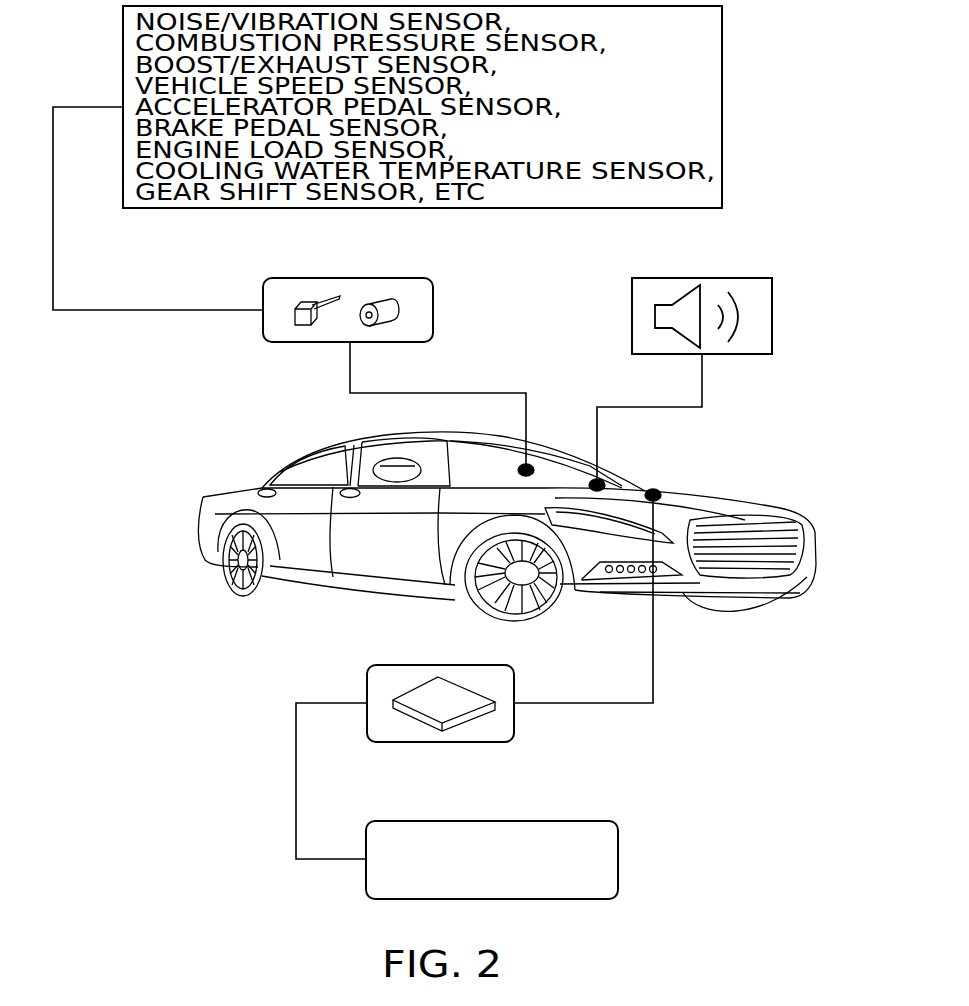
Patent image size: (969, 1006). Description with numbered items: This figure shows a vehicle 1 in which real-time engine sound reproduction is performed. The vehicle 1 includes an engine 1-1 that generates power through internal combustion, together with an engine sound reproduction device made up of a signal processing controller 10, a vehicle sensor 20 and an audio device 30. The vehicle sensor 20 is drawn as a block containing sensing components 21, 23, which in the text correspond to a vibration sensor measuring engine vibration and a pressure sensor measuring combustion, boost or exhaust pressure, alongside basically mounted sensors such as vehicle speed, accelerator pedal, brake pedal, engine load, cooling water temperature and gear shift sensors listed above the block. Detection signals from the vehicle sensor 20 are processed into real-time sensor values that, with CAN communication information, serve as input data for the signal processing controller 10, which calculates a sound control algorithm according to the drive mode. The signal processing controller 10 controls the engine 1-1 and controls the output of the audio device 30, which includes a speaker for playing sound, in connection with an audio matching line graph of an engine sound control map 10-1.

The vehicle 1 is at (775, 514).
The engine 1-1 is at (697, 497).
The signal processing controller 10 is at (514, 683).
The engine sound control map 10-1 is at (618, 858).
The vehicle sensor 20 is at (433, 310).
The sensor 21 is at (300, 326).
The sensor 23 is at (389, 326).
The audio device 30 is at (719, 278).